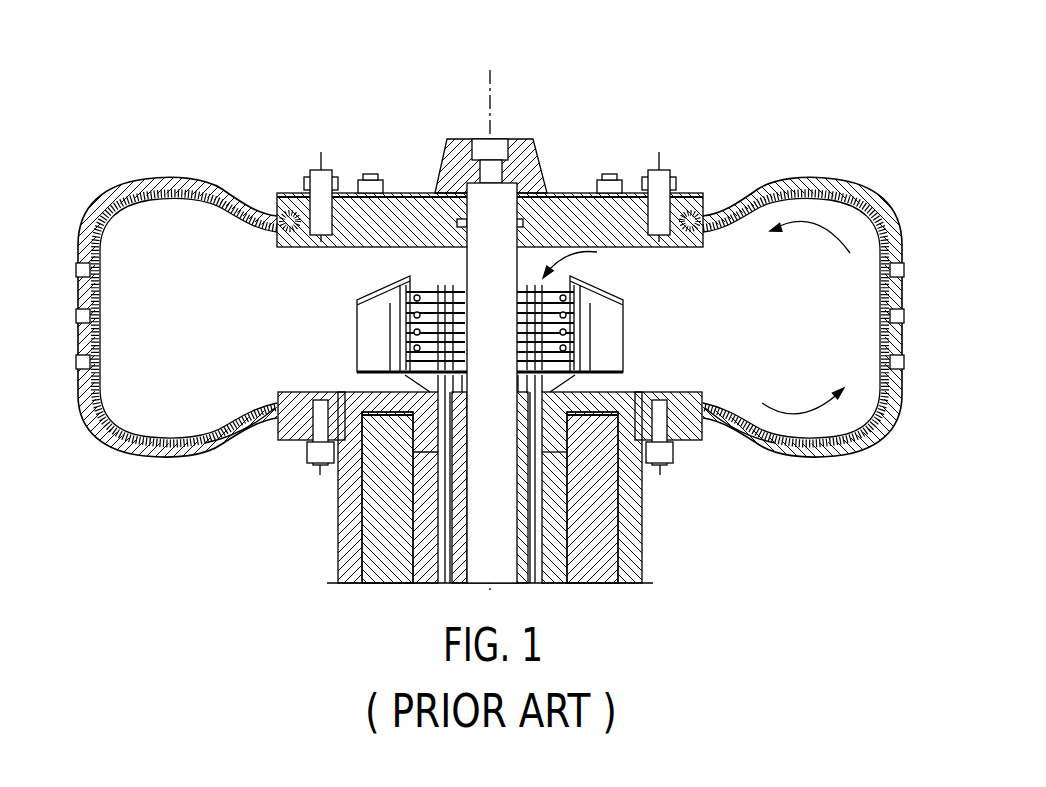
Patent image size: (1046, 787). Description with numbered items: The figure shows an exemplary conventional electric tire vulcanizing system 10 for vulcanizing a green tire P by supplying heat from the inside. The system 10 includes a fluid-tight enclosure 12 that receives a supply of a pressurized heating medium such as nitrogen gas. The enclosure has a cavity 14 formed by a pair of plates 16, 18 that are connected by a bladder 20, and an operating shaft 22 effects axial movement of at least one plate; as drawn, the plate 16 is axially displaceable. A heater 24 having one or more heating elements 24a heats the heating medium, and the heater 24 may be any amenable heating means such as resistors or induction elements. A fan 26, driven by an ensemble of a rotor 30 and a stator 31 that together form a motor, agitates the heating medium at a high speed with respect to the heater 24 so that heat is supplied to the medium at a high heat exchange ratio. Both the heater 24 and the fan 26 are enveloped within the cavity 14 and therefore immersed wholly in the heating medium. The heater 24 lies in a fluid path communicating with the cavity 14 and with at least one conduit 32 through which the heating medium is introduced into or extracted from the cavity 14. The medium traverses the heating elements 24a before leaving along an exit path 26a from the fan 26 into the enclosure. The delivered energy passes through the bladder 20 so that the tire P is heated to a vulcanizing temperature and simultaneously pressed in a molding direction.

The tire vulcanizing system 10 is at (170, 102).
The fluid-tight enclosure 12 is at (252, 205).
The cavity 14 is at (201, 342).
The plate 16 is at (563, 197).
The plate 18 is at (293, 442).
The bladder 20 is at (875, 217).
The operating shaft 22 is at (502, 522).
The heater 24 is at (415, 293).
The heating elements 24a is at (400, 353).
The fan 26 is at (372, 308).
The exit path 26a is at (705, 382).
The rotor 30 is at (428, 530).
The stator 31 is at (598, 555).
The conduit 32 is at (620, 570).
The green tire P is at (93, 413).